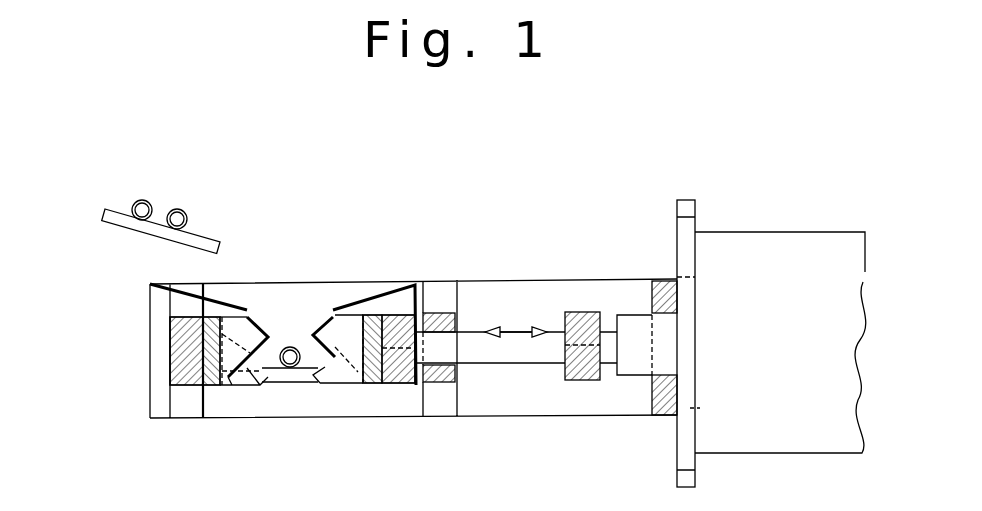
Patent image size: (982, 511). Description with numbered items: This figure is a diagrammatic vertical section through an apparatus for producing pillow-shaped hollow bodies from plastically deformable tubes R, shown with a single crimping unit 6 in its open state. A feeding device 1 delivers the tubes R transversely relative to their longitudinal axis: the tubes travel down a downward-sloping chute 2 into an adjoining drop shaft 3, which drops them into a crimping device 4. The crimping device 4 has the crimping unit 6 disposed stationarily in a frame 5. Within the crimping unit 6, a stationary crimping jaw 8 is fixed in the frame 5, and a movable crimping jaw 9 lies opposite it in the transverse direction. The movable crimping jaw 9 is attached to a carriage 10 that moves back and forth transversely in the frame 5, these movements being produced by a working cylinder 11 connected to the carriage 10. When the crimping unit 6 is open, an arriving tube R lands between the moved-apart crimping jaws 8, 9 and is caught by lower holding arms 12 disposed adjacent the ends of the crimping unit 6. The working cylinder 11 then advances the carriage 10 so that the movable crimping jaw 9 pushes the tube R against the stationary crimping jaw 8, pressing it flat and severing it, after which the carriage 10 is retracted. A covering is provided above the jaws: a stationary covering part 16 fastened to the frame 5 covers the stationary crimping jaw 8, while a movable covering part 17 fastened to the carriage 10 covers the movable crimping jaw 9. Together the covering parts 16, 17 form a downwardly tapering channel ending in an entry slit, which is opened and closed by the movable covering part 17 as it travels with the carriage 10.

The feeding device 1 is at (103, 192).
The chute 2 is at (112, 220).
The tube R is at (145, 199).
The drop shaft 3 is at (300, 268).
The crimping device 4 is at (503, 218).
The frame 5 is at (768, 248).
The crimping unit 6 is at (252, 393).
The stationary crimping jaw 8 is at (238, 327).
The movable crimping jaw 9 is at (331, 312).
The carriage 10 is at (397, 385).
The working cylinder 11 is at (628, 320).
The lower holding arm 12 is at (290, 377).
The stationary covering part 16 is at (157, 288).
The movable covering part 17 is at (390, 283).